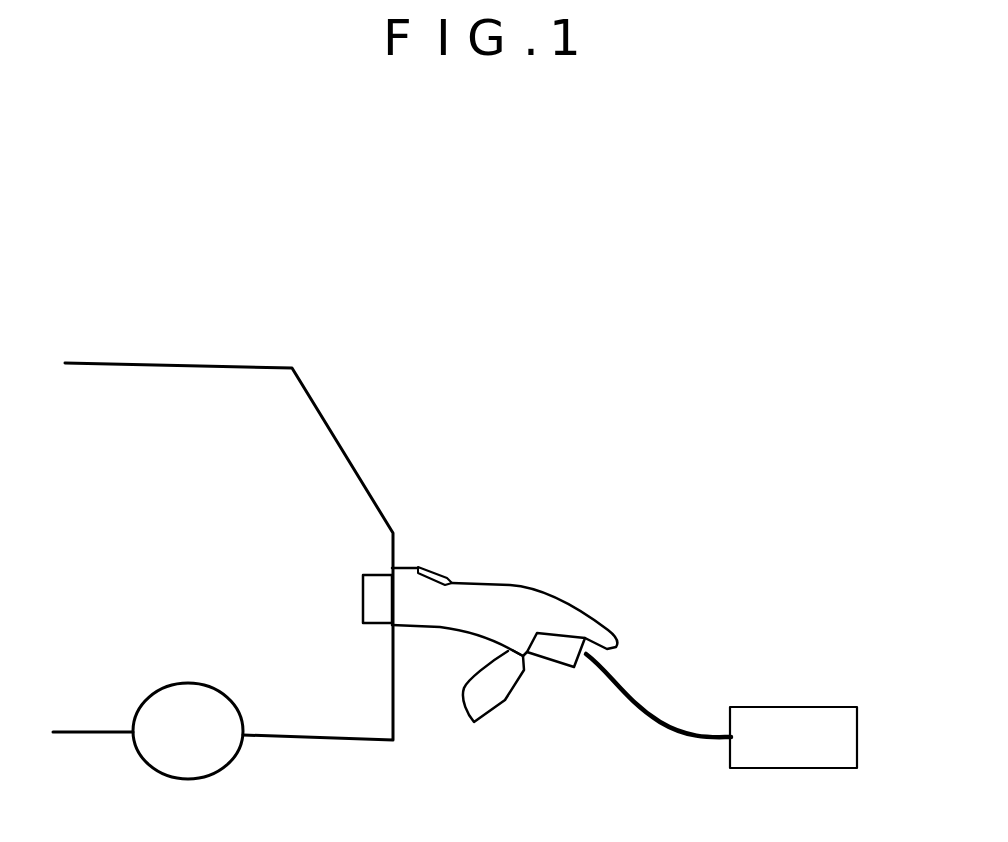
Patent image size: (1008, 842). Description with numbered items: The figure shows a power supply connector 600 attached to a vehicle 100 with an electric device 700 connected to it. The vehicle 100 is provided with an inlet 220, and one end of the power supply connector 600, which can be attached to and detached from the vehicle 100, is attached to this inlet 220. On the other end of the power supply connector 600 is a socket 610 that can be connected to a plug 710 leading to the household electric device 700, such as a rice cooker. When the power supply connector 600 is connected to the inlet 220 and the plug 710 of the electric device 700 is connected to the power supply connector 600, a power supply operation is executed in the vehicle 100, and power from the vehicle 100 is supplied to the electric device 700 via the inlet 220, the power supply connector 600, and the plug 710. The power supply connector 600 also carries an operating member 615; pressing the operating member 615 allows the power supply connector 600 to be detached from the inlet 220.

The vehicle 100 is at (345, 452).
The inlet 220 is at (380, 572).
The power supply connector 600 is at (412, 567).
The operating member 615 is at (438, 572).
The socket 610 is at (522, 645).
The plug 710 is at (594, 657).
The electric device 700 is at (797, 707).